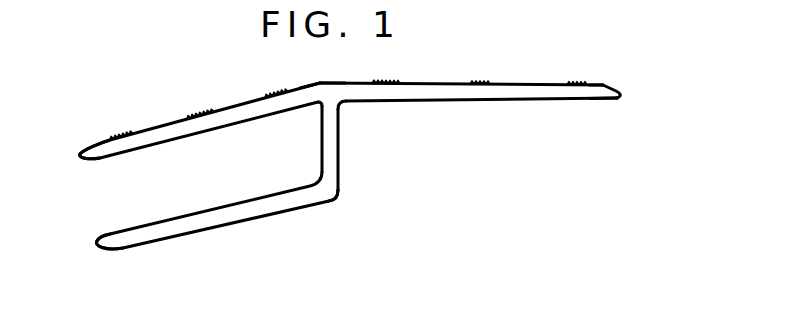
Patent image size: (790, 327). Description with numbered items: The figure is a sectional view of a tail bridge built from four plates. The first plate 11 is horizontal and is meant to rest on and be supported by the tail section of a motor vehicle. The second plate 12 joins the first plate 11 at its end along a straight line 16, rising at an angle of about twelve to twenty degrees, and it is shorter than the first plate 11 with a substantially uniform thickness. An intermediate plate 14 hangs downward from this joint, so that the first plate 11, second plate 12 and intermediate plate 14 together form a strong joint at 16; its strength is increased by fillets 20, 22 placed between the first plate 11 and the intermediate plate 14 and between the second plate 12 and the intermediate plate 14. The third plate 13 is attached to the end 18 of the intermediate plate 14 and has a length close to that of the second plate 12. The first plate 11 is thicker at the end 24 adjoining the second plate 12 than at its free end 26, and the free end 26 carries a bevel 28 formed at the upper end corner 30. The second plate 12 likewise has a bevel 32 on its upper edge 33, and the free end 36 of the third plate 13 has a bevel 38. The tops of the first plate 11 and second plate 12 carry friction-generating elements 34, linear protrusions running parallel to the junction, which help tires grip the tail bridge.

The first plate 11 is at (515, 100).
The second plate 12 is at (147, 138).
The third plate 13 is at (224, 218).
The intermediate plate 14 is at (330, 158).
The straight line joint 16 is at (333, 97).
The end of intermediate plate 18 is at (330, 198).
The fillet 20 is at (343, 104).
The fillet 22 is at (320, 105).
The end of first plate adjoining the second plate 24 is at (372, 96).
The free end of first plate 26 is at (608, 99).
The bevel 28 is at (608, 88).
The upper end corner 30 is at (602, 85).
The bevel 32 is at (92, 148).
The upper edge of second plate 33 is at (93, 160).
The friction-generating elements 34 is at (190, 111).
The free end of third plate 36 is at (110, 237).
The bevel 38 is at (110, 248).